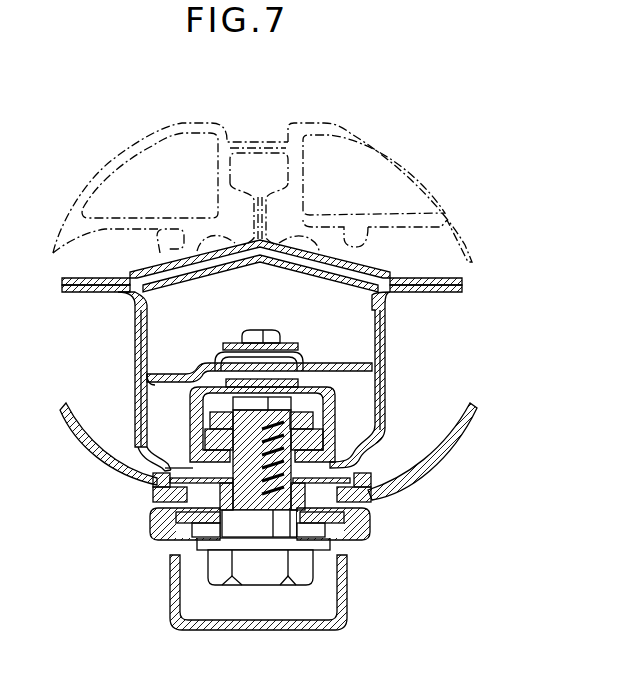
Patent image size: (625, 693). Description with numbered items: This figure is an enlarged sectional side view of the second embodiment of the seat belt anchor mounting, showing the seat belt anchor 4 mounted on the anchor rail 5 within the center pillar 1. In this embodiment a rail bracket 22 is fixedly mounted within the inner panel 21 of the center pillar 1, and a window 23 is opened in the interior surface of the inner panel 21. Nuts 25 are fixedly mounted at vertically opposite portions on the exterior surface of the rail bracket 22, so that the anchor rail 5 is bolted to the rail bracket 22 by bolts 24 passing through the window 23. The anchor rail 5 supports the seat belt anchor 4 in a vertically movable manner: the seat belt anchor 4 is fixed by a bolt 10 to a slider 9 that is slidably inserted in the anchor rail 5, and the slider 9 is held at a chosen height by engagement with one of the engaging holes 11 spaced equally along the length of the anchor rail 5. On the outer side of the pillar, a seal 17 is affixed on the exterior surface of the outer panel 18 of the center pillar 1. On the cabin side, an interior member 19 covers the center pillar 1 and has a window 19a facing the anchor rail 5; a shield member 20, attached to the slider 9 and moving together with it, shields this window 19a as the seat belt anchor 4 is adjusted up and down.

The center pillar 1 is at (416, 272).
The seat belt anchor 4 is at (152, 522).
The anchor rail 5 is at (189, 415).
The slider 9 is at (323, 432).
The bolt 10 is at (262, 568).
The engaging holes 11 is at (265, 382).
The seal 17 is at (340, 133).
The outer panel 18 is at (115, 279).
The interior member 19 is at (420, 468).
The window 19a is at (368, 513).
The shield member 20 is at (207, 487).
The inner panel 21 is at (386, 395).
The rail bracket 22 is at (188, 372).
The window 23 is at (157, 449).
The bolts 24 is at (246, 331).
The nuts 25 is at (298, 347).